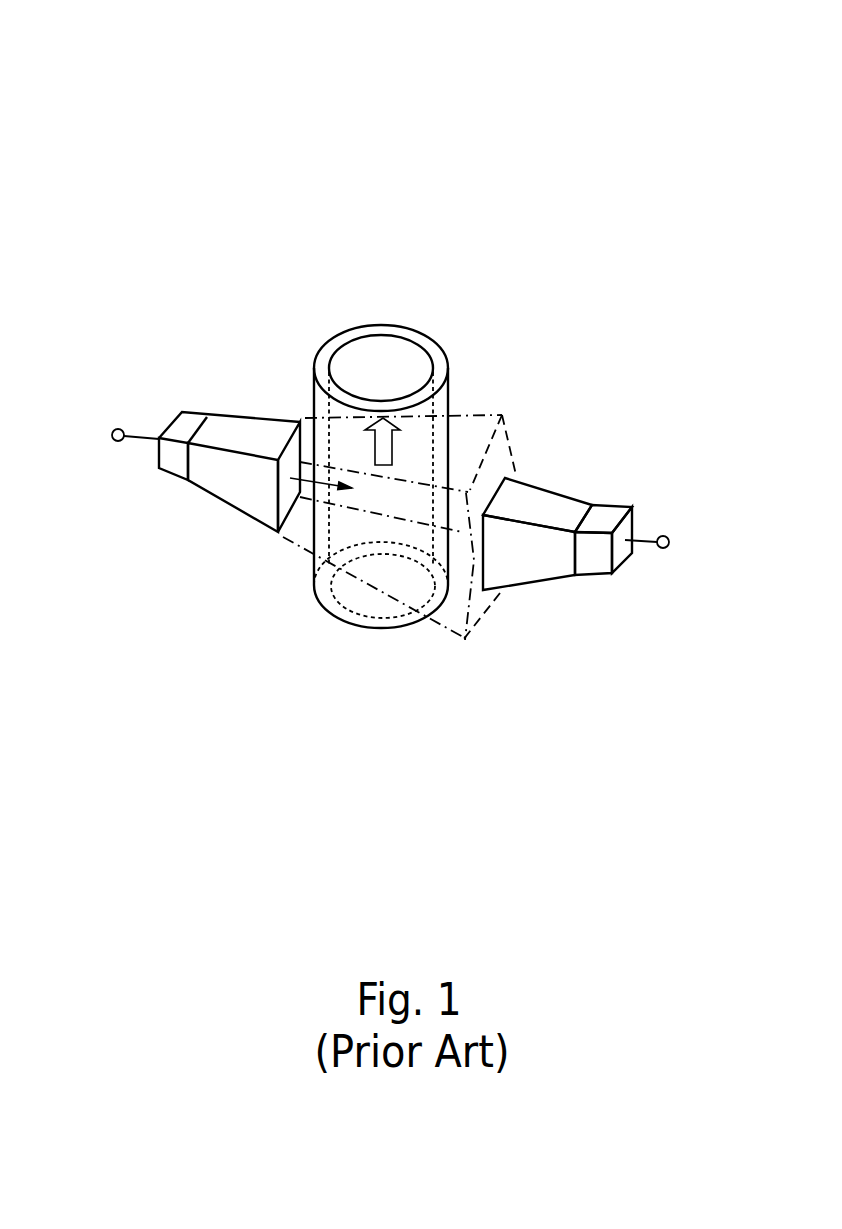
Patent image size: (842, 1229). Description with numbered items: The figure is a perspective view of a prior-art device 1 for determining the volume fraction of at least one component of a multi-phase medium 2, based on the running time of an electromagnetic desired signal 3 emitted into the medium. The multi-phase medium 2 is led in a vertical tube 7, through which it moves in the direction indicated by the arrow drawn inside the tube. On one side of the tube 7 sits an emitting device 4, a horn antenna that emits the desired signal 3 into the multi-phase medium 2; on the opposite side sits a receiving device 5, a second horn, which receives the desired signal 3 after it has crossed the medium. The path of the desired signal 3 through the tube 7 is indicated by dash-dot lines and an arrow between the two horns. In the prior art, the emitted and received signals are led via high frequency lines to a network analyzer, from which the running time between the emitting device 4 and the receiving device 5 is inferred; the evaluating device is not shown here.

The device 1 is at (320, 163).
The multi-phase medium 2 is at (347, 590).
The desired signal 3 is at (324, 546).
The emitting device 4 is at (234, 428).
The receiving device 5 is at (553, 502).
The tube 7 is at (437, 353).